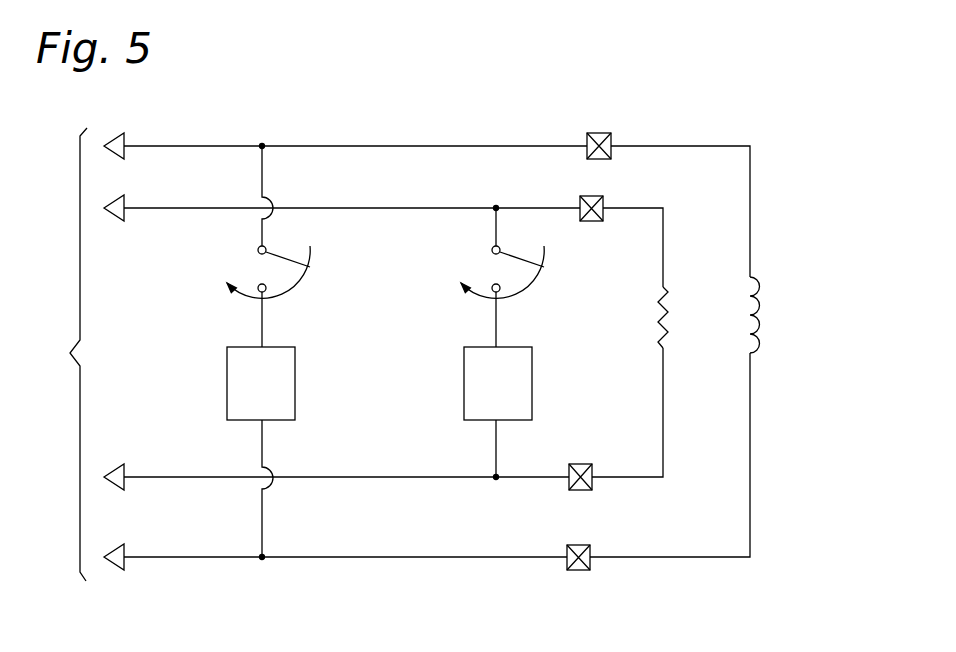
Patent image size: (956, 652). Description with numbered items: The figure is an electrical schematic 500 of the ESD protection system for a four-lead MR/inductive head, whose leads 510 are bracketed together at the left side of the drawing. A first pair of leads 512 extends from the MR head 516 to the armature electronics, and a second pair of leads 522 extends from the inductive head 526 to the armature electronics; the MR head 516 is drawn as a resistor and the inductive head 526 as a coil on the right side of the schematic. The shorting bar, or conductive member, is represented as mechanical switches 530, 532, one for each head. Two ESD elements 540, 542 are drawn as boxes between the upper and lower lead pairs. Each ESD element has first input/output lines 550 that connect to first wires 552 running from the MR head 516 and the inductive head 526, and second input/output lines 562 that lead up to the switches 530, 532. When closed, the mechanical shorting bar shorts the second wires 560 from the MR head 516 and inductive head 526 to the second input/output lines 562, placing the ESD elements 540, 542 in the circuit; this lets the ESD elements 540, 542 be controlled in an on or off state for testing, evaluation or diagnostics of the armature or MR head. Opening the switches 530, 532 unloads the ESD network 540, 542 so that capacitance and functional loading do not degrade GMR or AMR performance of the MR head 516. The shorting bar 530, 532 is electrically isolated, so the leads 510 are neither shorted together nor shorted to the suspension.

The electrical schematic 500 is at (681, 87).
The leads 510 is at (57, 354).
The first pair of leads 512 is at (178, 207).
The MR head 516 is at (657, 340).
The second pair of leads 522 is at (180, 145).
The inductive head 526 is at (757, 273).
The switch 530 is at (288, 258).
The switch 532 is at (522, 257).
The ESD element 540 is at (297, 373).
The ESD element 542 is at (465, 377).
The first input/output lines 550 is at (263, 522).
The first wires 552 is at (535, 482).
The second wires 560 is at (525, 145).
The second input/output lines 562 is at (265, 327).